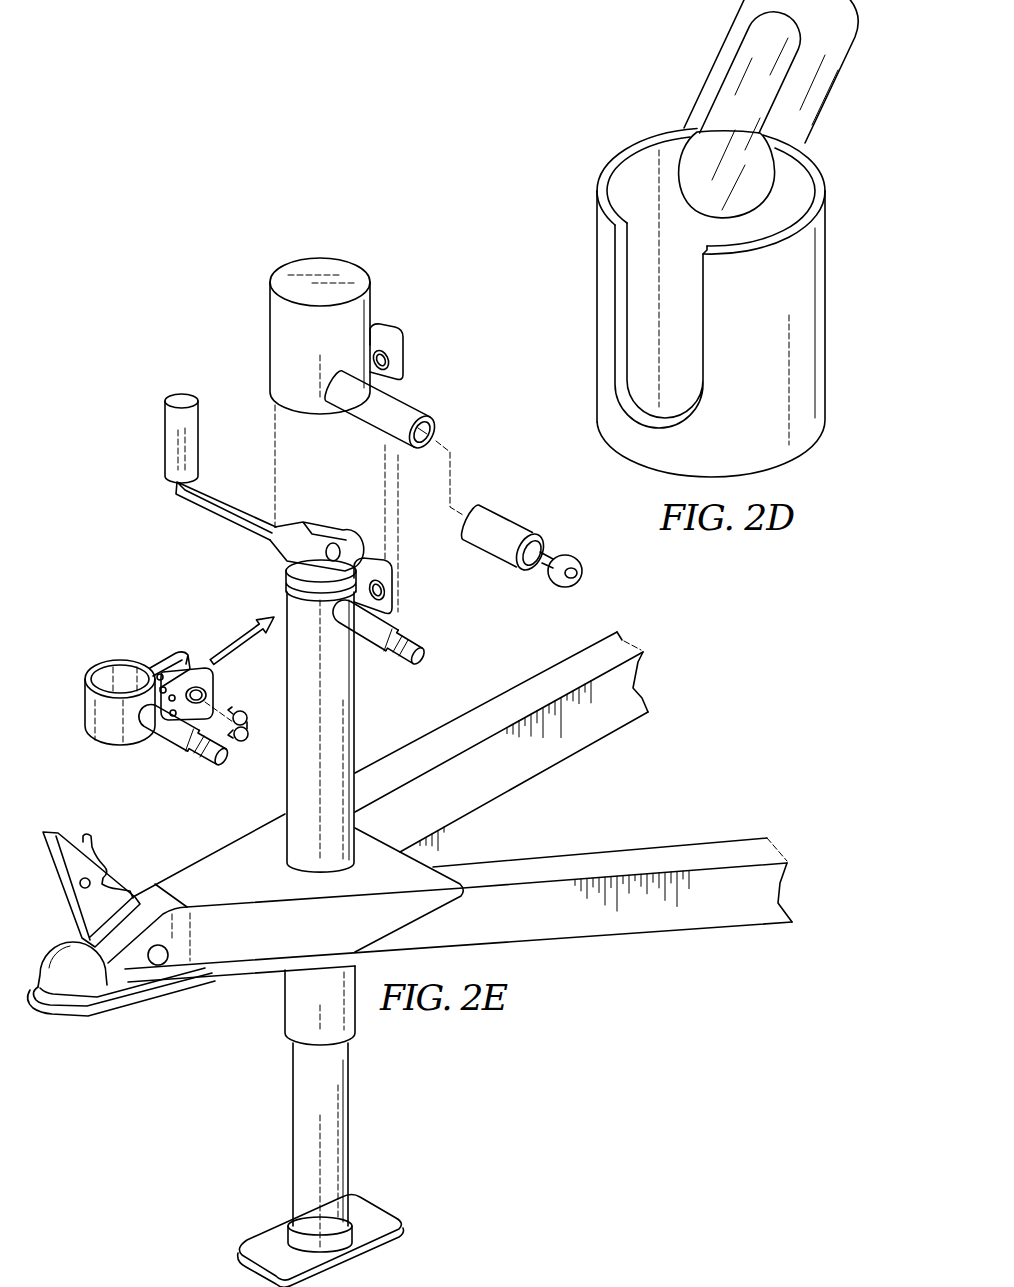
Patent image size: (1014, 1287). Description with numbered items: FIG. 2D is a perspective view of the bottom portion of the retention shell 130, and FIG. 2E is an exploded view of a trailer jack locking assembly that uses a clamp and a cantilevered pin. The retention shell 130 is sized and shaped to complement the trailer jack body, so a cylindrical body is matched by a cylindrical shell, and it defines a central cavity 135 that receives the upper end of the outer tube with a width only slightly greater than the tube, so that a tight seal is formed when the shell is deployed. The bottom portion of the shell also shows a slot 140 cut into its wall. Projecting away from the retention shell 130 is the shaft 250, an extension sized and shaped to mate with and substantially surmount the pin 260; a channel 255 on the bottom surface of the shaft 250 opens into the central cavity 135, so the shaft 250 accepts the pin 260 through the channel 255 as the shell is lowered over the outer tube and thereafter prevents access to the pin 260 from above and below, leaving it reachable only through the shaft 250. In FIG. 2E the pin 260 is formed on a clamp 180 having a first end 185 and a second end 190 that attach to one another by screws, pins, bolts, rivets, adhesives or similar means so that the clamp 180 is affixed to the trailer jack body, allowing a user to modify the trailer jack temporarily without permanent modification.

In FIG. 2D, the retention shell 130 is at (826, 292).
In FIG. 2D, the central cavity 135 is at (646, 190).
In FIG. 2D, the slot 140 is at (648, 350).
In FIG. 2D, the shaft 250 is at (850, 50).
In FIG. 2D, the channel 255 is at (750, 100).
In FIG. 2E, the clamp 180 is at (87, 712).
In FIG. 2E, the first end 185 is at (210, 684).
In FIG. 2E, the second end 190 is at (167, 653).
In FIG. 2E, the cantilevered pin 260 is at (200, 772).